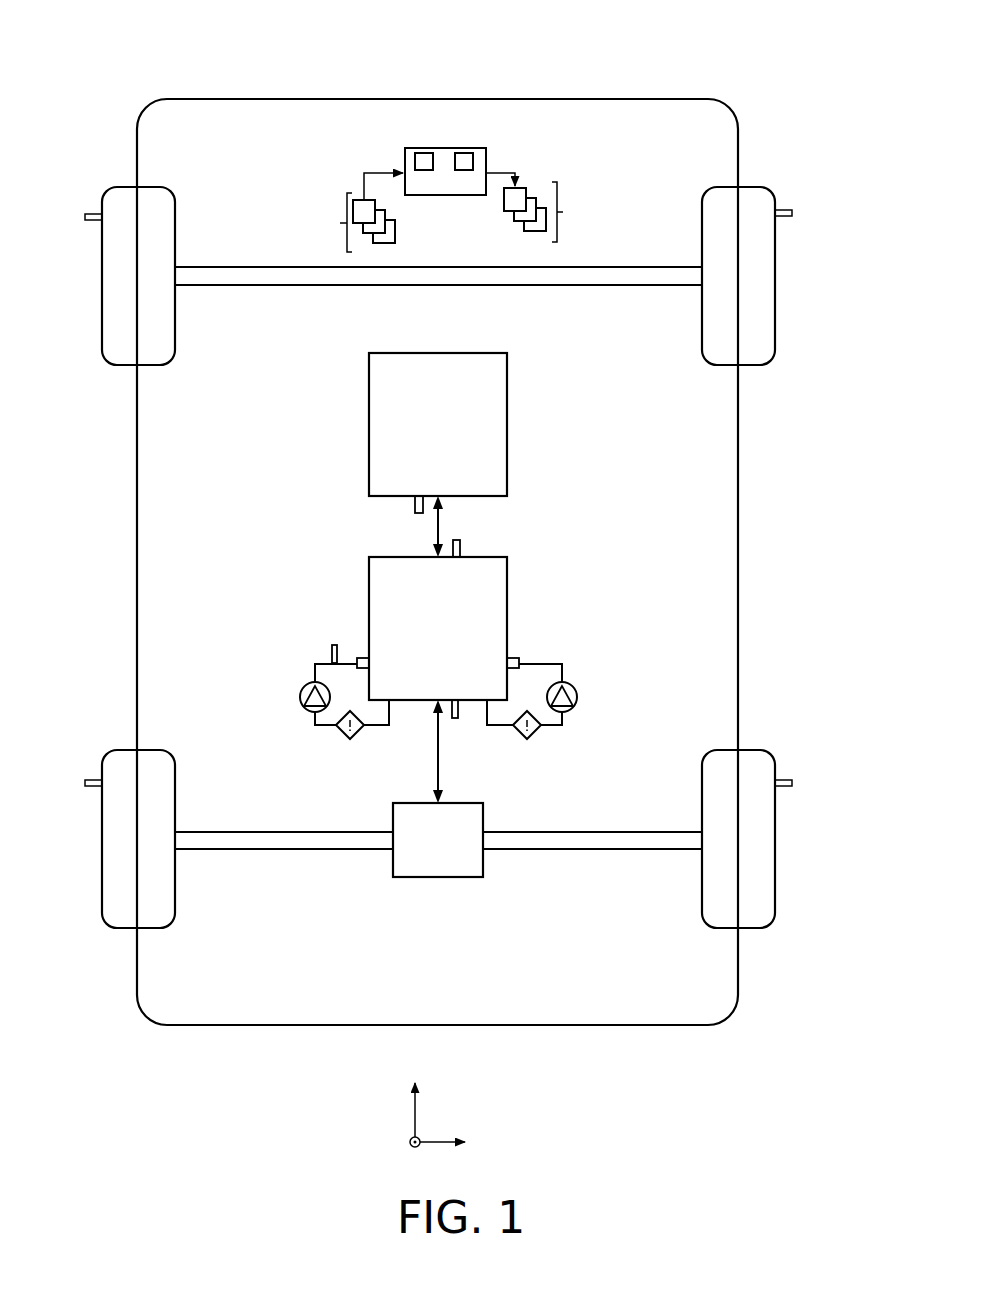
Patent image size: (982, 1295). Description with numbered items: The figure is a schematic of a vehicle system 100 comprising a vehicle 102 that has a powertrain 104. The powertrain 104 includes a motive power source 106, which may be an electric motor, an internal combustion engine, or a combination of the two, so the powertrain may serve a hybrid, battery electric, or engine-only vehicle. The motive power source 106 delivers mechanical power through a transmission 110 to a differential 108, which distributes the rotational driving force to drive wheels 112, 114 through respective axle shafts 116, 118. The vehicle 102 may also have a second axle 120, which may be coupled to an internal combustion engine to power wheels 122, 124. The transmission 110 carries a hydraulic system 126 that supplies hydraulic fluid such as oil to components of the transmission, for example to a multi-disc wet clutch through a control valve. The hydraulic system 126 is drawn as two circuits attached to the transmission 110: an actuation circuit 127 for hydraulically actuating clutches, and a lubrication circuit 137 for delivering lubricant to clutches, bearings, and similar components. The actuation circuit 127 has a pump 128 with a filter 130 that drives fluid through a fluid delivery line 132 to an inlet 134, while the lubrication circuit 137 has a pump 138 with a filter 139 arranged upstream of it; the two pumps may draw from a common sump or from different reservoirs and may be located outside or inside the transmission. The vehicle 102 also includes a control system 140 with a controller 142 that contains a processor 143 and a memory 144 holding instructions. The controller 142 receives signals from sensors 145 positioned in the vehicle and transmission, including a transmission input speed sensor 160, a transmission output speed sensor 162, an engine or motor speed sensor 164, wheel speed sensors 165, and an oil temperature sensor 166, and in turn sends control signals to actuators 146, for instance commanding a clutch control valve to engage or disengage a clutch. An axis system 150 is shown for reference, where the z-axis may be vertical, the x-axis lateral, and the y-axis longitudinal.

The vehicle system 100 is at (757, 62).
The vehicle 102 is at (637, 99).
The powertrain 104 is at (295, 450).
The motive power source 106 is at (438, 424).
The differential 108 is at (438, 840).
The transmission 110 is at (438, 628).
The drive wheel 112 is at (100, 911).
The drive wheel 114 is at (775, 910).
The axle shaft 116 is at (277, 849).
The axle shaft 118 is at (637, 849).
The second axle 120 is at (307, 285).
The wheel 122 is at (100, 347).
The wheel 124 is at (775, 347).
The hydraulic system 126 is at (648, 565).
The actuation circuit 127 is at (585, 617).
The pump 128 is at (577, 700).
The filter 130 is at (540, 733).
The fluid delivery line 132 is at (564, 673).
The inlet 134 is at (519, 660).
The lubrication circuit 137 is at (287, 645).
The pump 138 is at (300, 700).
The filter 139 is at (340, 737).
The control system 140 is at (300, 162).
The controller 142 is at (445, 151).
The processor 143 is at (405, 148).
The memory 144 is at (483, 148).
The sensors 145 is at (353, 212).
The actuators 146 is at (542, 207).
The axis system 150 is at (478, 1085).
The transmission input speed sensor 160 is at (460, 548).
The transmission output speed sensor 162 is at (455, 718).
The engine or motor speed sensor 164 is at (415, 507).
The wheel speed sensor 165 is at (787, 777).
The oil temperature sensor 166 is at (334, 645).